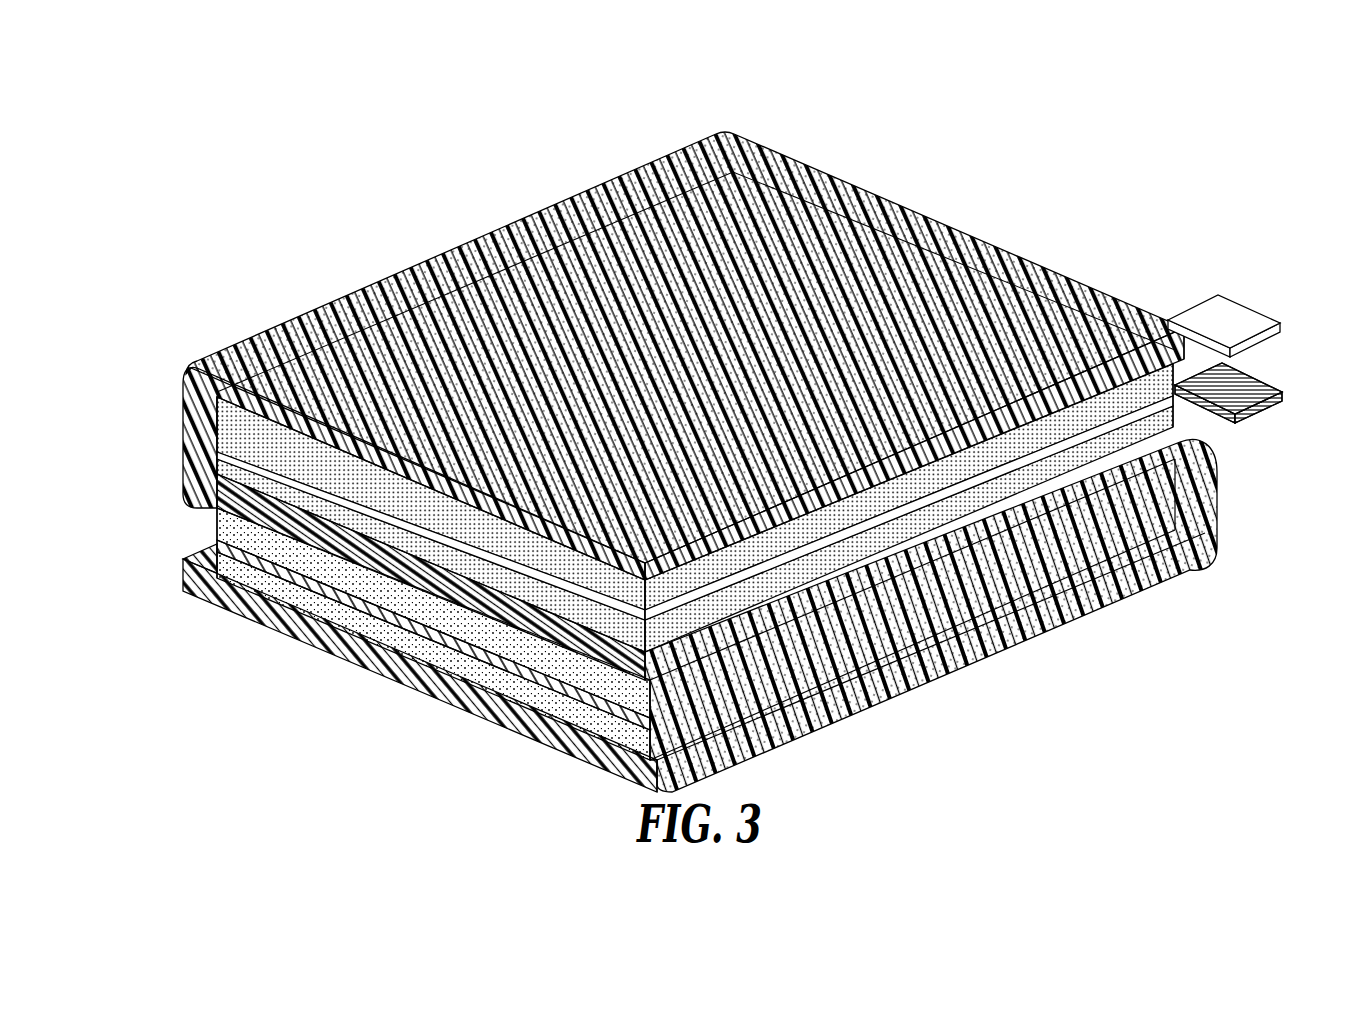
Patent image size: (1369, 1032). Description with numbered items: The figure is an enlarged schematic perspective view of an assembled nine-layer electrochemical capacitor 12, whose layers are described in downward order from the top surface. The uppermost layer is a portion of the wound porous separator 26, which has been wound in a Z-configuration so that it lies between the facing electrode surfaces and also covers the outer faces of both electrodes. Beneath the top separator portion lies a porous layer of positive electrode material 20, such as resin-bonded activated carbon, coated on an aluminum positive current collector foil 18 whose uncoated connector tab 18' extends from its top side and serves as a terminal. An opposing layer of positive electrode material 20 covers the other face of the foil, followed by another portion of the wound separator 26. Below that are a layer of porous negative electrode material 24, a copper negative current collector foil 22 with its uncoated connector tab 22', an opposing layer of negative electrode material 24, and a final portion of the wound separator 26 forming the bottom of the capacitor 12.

The electrochemical capacitor 12 is at (1126, 203).
The aluminum foil current collector 18 is at (614, 508).
The connector tab 18' is at (1261, 297).
The positive electrode material 20 is at (240, 417).
The copper foil current collector 22 is at (383, 635).
The connector tab 22' is at (1270, 376).
The negative electrode material 24 is at (238, 521).
The separator 26 is at (220, 486).